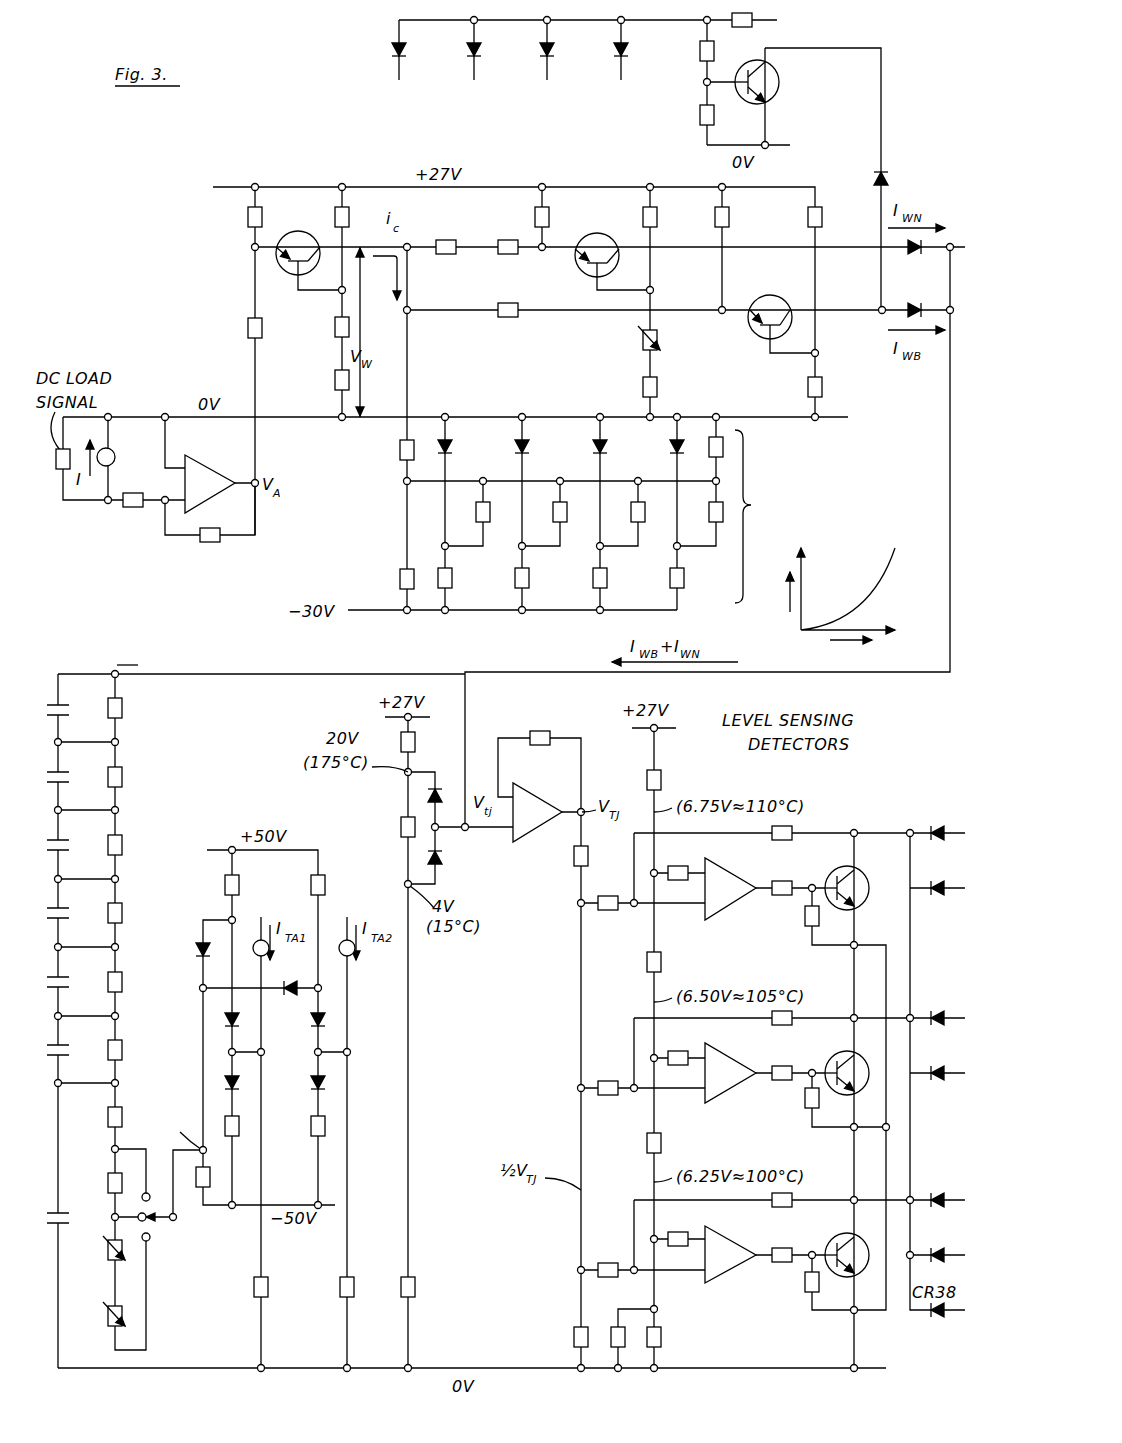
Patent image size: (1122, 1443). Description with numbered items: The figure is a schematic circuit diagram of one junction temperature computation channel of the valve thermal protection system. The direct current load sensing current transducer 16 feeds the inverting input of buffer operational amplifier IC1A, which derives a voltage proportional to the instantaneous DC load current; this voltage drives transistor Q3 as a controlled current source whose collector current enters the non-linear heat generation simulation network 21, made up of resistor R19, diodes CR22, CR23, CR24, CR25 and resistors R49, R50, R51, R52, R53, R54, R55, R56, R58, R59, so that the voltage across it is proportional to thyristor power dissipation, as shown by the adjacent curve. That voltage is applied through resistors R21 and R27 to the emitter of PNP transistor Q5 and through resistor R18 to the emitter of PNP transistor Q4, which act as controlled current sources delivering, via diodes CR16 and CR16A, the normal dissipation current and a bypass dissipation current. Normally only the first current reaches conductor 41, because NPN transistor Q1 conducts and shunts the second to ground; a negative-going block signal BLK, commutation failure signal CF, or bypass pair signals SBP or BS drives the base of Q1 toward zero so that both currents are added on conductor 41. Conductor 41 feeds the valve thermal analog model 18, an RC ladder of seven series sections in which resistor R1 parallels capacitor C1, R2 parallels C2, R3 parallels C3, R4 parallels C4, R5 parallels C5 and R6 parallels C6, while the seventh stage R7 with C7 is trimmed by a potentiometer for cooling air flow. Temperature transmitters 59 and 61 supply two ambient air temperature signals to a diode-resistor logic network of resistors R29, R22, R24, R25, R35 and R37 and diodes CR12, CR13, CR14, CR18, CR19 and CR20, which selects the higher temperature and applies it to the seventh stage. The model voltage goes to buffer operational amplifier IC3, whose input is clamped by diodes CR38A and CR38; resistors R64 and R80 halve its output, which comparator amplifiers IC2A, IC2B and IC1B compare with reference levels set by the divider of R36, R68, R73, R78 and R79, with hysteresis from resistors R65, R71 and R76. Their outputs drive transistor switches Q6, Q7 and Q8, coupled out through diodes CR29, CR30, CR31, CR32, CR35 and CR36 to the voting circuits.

The direct current load sensing current transducer 16 is at (116, 460).
The valve thermal analog model 18 is at (250, 983).
The non-linear heat generation simulation network 21 is at (880, 495).
The conductor 41 is at (948, 526).
The temperature transmitter 59 is at (258, 946).
The temperature transmitter 61 is at (343, 946).
The NPN transistor Q1 is at (778, 90).
The transistor Q3 is at (303, 234).
The PNP transistor Q4 is at (768, 295).
The PNP transistor Q5 is at (596, 233).
The transistor switch Q6 is at (838, 870).
The transistor switch Q7 is at (838, 1055).
The transistor switch Q8 is at (838, 1237).
The buffer operational amplifier IC1A is at (236, 448).
The level sensing detector comparator amplifier IC1B is at (764, 1300).
The level sensing detector comparator amplifier IC2A is at (766, 935).
The level sensing detector comparator amplifier IC2B is at (764, 1119).
The buffer operational amplifier IC3 is at (560, 787).
The resistor R1 is at (128, 708).
The resistor R2 is at (128, 777).
The resistor R3 is at (128, 845).
The resistor R4 is at (128, 913).
The resistor R5 is at (128, 982).
The resistor R6 is at (128, 1050).
The resistor R7 is at (120, 1146).
The resistor R18 is at (510, 320).
The resistor R19 is at (400, 452).
The resistor R21 is at (446, 257).
The resistor R22 is at (252, 1288).
The resistor R24 is at (311, 884).
The resistor R25 is at (338, 1288).
The resistor R27 is at (510, 257).
The resistor R29 is at (224, 884).
The resistor R35 is at (240, 1122).
The resistor R36 is at (648, 776).
The resistor R37 is at (312, 1134).
The resistor R49 is at (400, 580).
The resistor R50 is at (440, 592).
The resistor R51 is at (476, 504).
The resistor R52 is at (514, 584).
The resistor R53 is at (554, 504).
The resistor R54 is at (592, 584).
The resistor R55 is at (631, 504).
The resistor R56 is at (712, 436).
The resistor R58 is at (710, 524).
The resistor R59 is at (669, 584).
The resistor R64 is at (574, 864).
The resistor R65 is at (786, 841).
The resistor R68 is at (648, 964).
The resistor R71 is at (786, 1026).
The resistor R73 is at (648, 1144).
The resistor R76 is at (786, 1208).
The resistor R78 is at (662, 1338).
The resistor R79 is at (614, 1326).
The resistor R80 is at (574, 1340).
The capacitor C1 is at (69, 710).
The capacitor C2 is at (69, 777).
The capacitor C3 is at (69, 845).
The capacitor C4 is at (69, 913).
The capacitor C5 is at (69, 982).
The capacitor C6 is at (69, 1050).
The capacitor C7 is at (70, 1218).
The diode CR12 is at (194, 954).
The diode CR13 is at (222, 1022).
The diode CR14 is at (222, 1086).
The diode CR16 is at (916, 260).
The diode CR16A is at (910, 308).
The diode CR18 is at (290, 996).
The diode CR19 is at (326, 1020).
The diode CR20 is at (326, 1084).
The diode CR22 is at (439, 440).
The diode CR23 is at (514, 446).
The diode CR24 is at (592, 446).
The diode CR25 is at (670, 446).
The coupling diode CR29 is at (934, 820).
The coupling diode CR30 is at (934, 877).
The coupling diode CR31 is at (934, 1006).
The coupling diode CR32 is at (934, 1062).
The coupling diode CR35 is at (934, 1189).
The coupling diode CR36 is at (934, 1245).
The diode CR38 is at (442, 782).
The diode CR38A is at (438, 854).
The block signal BLK is at (420, 90).
The commutation failure signal CF is at (490, 90).
The valve bypass pair formation signal SBP is at (570, 90).
The valve bypass pair formation signal BS is at (635, 90).